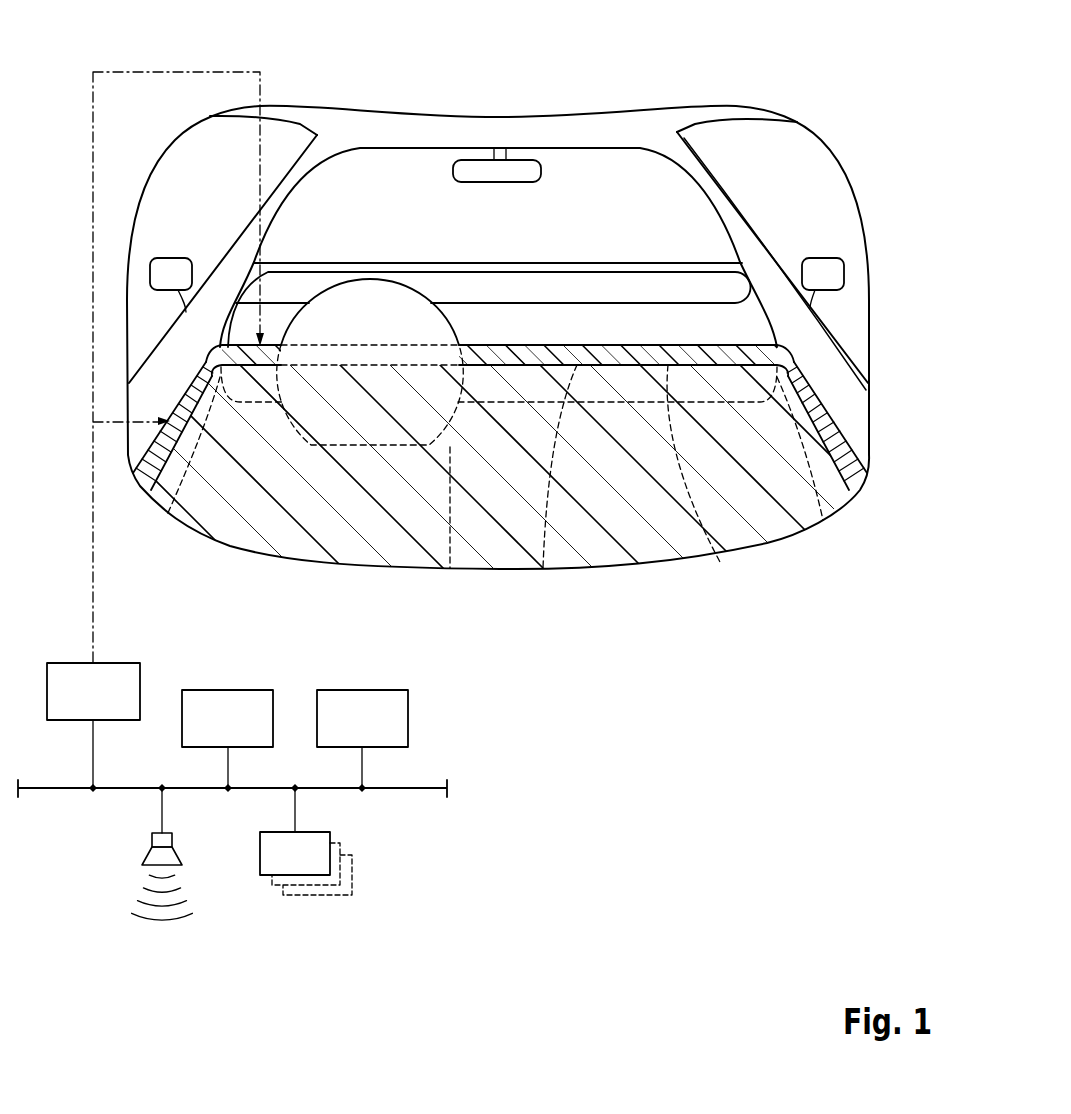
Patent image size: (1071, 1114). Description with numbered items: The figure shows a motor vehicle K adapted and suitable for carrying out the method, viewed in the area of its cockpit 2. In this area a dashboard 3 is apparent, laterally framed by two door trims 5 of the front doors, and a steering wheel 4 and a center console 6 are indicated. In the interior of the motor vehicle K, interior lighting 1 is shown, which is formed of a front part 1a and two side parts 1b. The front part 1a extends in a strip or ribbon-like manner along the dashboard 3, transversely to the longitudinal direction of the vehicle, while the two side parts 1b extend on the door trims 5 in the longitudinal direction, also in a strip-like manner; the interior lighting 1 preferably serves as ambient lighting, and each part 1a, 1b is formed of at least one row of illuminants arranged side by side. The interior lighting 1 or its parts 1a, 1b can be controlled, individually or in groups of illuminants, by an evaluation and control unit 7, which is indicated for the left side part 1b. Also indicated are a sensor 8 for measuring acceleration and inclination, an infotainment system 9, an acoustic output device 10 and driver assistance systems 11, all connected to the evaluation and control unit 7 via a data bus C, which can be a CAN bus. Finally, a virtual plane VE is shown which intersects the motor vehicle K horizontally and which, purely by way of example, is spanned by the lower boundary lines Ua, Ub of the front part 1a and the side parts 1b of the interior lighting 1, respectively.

The motor vehicle K is at (735, 62).
The interior lighting 1 is at (618, 328).
The front part 1a is at (580, 344).
The side parts 1b is at (130, 476).
The cockpit 2 is at (470, 280).
The dashboard 3 is at (758, 323).
The steering wheel 4 is at (378, 277).
The door trims 5 is at (138, 437).
The center console 6 is at (557, 558).
The virtual plane VE is at (610, 557).
The lower boundary line Ua is at (720, 563).
The lower boundary lines Ub is at (142, 491).
The evaluation and control unit 7 is at (67, 662).
The sensor 8 is at (230, 689).
The infotainment system 9 is at (363, 689).
The acoustic output device 10 is at (143, 853).
The driver assistance systems 11 is at (260, 853).
The data bus C is at (58, 798).